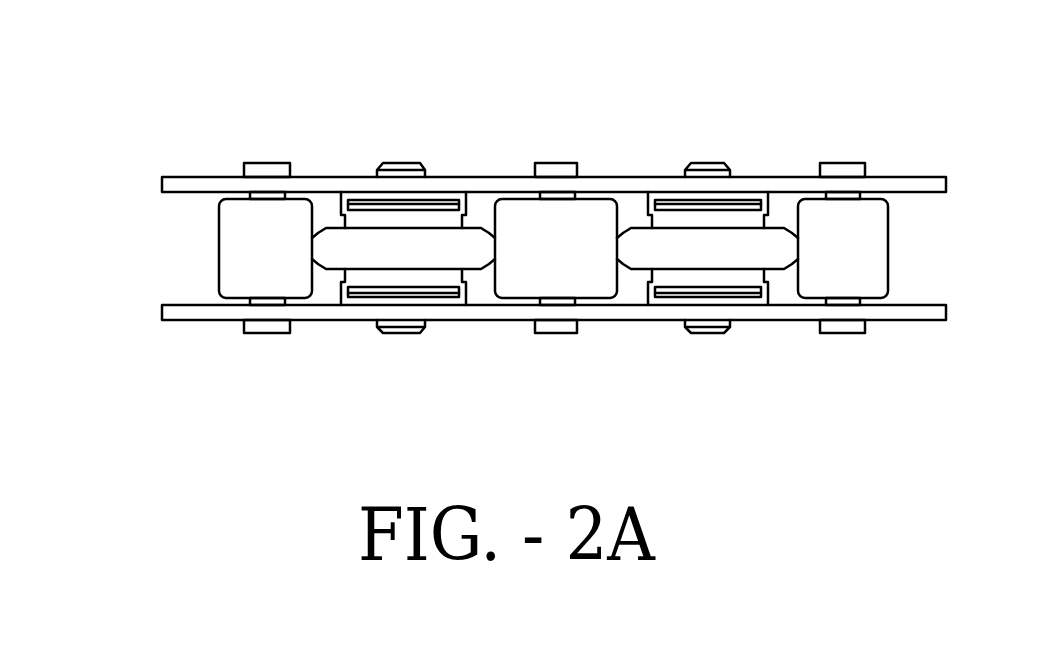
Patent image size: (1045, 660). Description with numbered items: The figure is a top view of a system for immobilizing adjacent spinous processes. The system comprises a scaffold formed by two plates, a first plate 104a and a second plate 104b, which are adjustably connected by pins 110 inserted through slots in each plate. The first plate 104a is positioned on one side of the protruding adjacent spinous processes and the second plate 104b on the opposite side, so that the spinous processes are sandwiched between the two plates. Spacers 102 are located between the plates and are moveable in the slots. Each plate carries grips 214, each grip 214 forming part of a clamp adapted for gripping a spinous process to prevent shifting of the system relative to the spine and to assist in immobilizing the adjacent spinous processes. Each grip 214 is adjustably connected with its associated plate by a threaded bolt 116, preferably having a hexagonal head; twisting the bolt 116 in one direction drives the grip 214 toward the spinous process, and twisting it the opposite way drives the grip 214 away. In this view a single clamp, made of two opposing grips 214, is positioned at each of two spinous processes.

The spacer 102 is at (592, 215).
The first plate 104a is at (188, 313).
The second plate 104b is at (190, 177).
The pin 110 is at (560, 162).
The threaded bolt 116 is at (408, 163).
The grip 214 is at (357, 212).